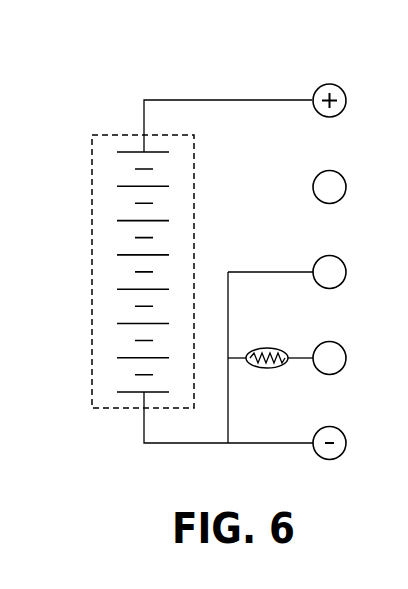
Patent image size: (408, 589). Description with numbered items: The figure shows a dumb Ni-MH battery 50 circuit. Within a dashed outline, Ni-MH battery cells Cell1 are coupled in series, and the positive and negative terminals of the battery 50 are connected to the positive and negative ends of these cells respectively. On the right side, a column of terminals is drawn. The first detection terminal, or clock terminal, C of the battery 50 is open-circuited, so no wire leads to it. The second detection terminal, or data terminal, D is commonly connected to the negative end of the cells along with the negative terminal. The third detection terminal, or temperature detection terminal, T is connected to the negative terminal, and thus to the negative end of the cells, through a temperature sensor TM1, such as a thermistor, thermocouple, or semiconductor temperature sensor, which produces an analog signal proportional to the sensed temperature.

The Ni-MH dumb battery 50 is at (236, 50).
The temperature sensor TM1 is at (266, 375).
The Ni-MH battery cells Cell1 is at (110, 271).
The first detection terminal C is at (329, 187).
The second detection terminal D is at (329, 272).
The third detection terminal T is at (329, 358).